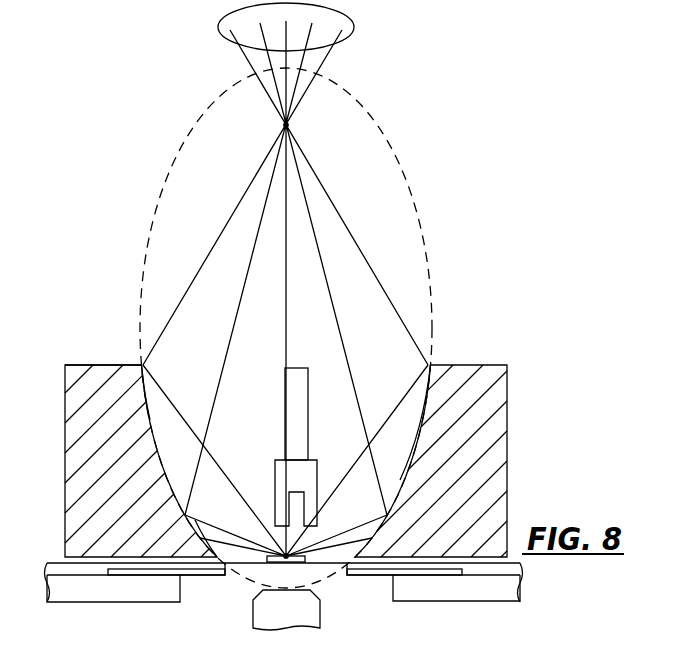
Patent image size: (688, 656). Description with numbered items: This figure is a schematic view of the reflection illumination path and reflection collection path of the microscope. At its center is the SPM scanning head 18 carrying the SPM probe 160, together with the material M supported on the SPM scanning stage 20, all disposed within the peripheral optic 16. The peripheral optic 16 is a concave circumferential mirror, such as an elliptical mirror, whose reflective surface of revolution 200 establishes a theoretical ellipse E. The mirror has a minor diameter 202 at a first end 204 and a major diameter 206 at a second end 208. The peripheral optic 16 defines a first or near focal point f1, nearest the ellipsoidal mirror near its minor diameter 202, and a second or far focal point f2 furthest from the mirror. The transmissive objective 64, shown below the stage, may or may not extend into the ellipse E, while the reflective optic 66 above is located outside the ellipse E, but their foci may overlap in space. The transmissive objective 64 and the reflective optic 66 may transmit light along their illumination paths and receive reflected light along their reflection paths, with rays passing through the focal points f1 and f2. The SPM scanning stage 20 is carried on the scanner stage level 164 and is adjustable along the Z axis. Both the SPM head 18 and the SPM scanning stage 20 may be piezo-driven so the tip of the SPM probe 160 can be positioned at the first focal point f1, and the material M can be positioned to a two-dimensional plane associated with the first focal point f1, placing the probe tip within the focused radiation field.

The peripheral optic 16 is at (513, 411).
The SPM scanning head 18 is at (322, 361).
The SPM scanning stage 20 is at (118, 590).
The transmissive objective 64 is at (241, 605).
The reflective optic 66 is at (354, 46).
The SPM probe 160 is at (267, 484).
The scanner stage level 164 is at (533, 583).
The reflective surface of revolution 200 is at (421, 408).
The minor diameter 202 is at (218, 555).
The first end 204 is at (73, 561).
The major diameter 206 is at (144, 363).
The second end 208 is at (83, 363).
The theoretical ellipse E is at (383, 130).
The first focal point f1 is at (283, 554).
The second focal point f2 is at (288, 125).
The material m is at (290, 555).